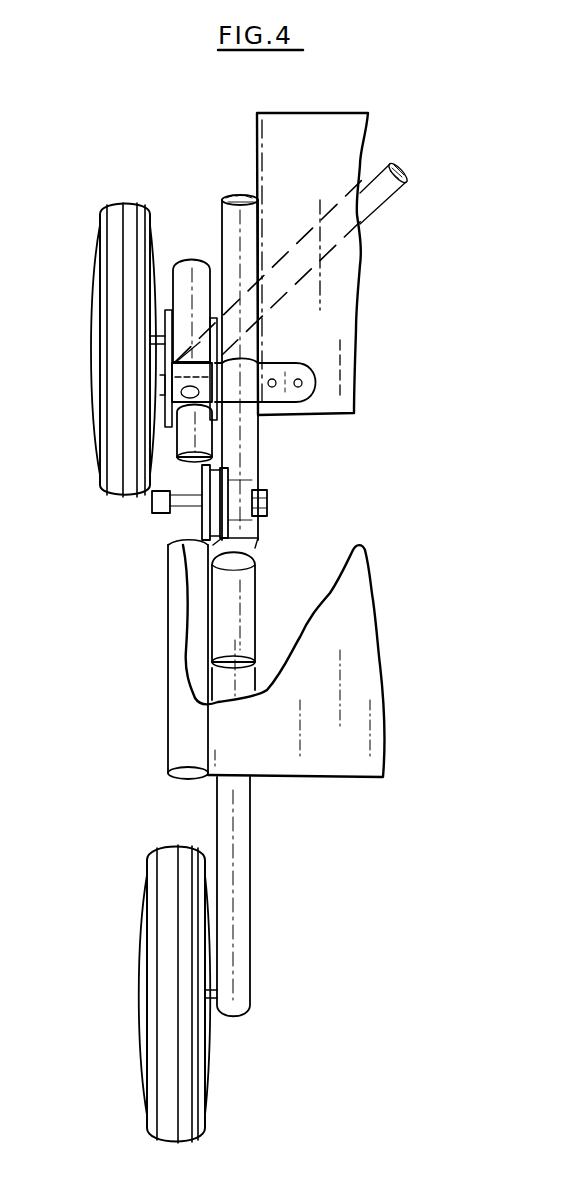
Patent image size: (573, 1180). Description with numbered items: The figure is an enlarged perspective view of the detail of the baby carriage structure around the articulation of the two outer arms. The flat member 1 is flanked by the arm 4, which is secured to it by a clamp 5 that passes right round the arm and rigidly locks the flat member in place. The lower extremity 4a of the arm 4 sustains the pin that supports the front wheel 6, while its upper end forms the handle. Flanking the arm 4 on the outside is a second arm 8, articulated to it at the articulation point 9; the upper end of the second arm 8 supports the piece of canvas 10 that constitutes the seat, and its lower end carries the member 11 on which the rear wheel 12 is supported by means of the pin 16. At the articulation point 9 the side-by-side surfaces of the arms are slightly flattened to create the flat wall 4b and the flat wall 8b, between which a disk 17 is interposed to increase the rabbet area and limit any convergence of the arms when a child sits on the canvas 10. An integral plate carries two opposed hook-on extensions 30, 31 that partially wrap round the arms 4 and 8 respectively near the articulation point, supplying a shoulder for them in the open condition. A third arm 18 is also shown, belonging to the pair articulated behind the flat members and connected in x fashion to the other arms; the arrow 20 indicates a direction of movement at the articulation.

The flat member 1 is at (311, 128).
The arm 4 is at (234, 205).
The lower extremity of arm 4a is at (245, 999).
The flat wall 4b is at (228, 536).
The clamp 5 is at (272, 373).
The front wheel 6 is at (200, 1132).
The second arm 8 is at (186, 265).
The flat wall 8b is at (202, 518).
The articulation point 9 is at (268, 500).
The piece of canvas 10 is at (322, 770).
The member 11 is at (167, 322).
The rear wheel 12 is at (113, 203).
The pin 16 is at (160, 336).
The disk 17 is at (205, 476).
The third arm 18 is at (388, 195).
The pivoting direction 20 is at (163, 397).
The hook-on extension 30 is at (247, 605).
The hook-on extension 31 is at (203, 432).